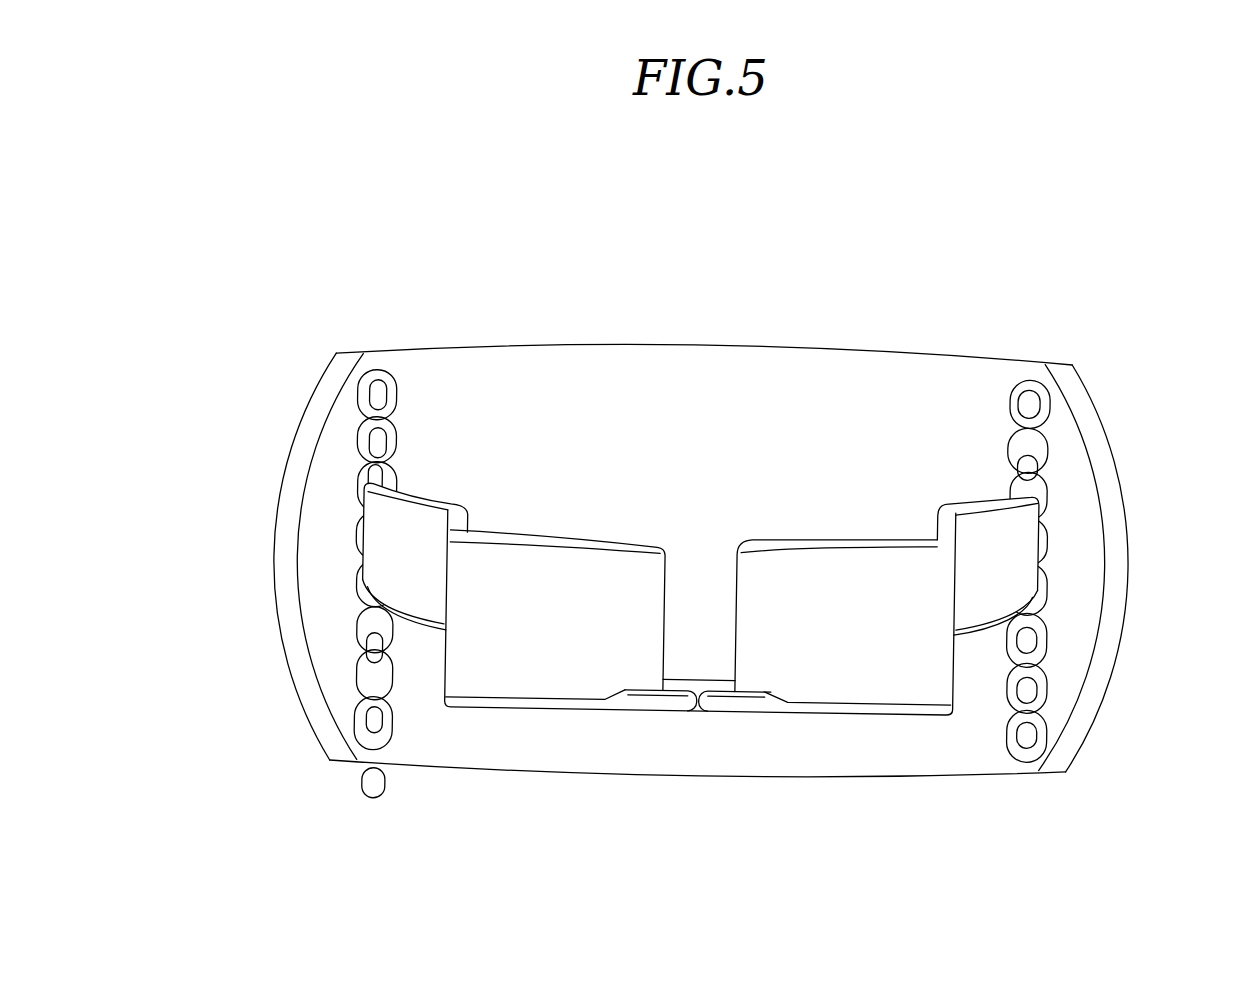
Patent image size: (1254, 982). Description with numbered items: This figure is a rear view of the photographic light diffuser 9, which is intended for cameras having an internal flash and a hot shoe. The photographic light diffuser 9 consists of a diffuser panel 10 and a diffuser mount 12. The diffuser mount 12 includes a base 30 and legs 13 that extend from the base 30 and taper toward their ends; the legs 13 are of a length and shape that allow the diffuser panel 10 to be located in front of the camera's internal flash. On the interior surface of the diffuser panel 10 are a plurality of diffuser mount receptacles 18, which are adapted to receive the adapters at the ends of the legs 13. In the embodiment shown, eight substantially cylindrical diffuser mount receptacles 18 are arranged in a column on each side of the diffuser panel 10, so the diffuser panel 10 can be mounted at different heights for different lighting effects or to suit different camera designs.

The photographic light diffuser 9 is at (693, 495).
The diffuser panel 10 is at (456, 786).
The diffuser mount 12 is at (902, 665).
The legs 13 is at (397, 542).
The diffuser mount receptacles 18 is at (1037, 687).
The base 30 is at (727, 742).